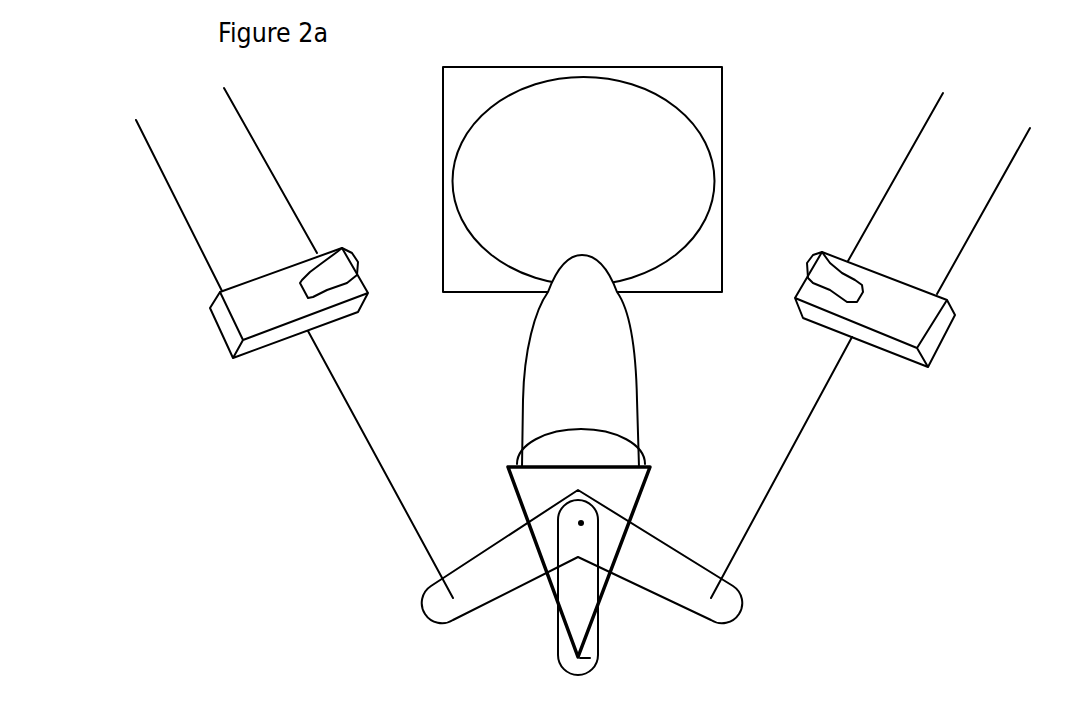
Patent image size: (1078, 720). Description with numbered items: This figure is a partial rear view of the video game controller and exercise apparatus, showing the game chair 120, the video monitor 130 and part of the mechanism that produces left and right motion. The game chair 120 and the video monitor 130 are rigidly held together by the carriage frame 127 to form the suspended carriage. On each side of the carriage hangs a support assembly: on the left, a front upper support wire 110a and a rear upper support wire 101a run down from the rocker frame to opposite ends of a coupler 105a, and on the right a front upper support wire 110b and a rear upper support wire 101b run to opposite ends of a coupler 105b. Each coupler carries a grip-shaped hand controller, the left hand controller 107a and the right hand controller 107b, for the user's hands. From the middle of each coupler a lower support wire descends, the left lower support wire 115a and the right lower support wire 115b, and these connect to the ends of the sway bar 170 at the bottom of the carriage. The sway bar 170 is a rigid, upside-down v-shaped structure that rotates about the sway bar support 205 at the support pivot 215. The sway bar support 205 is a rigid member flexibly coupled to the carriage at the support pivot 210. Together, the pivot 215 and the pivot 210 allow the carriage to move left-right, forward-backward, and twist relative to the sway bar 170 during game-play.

The left rear upper support wire 101a is at (183, 208).
The right rear upper support wire 101b is at (968, 238).
The left coupler 105a is at (220, 332).
The right coupler 105b is at (943, 338).
The left hand controller 107a is at (357, 254).
The right hand controller 107b is at (805, 260).
The left front upper support wire 110a is at (277, 185).
The right front upper support wire 110b is at (883, 198).
The left lower support wire 115a is at (382, 462).
The right lower support wire 115b is at (790, 448).
The game chair 120 is at (640, 378).
The carriage frame 127 is at (643, 497).
The video monitor 130 is at (727, 120).
The sway bar 170 is at (479, 614).
The sway bar support 205 is at (572, 595).
The support pivot 210 is at (590, 658).
The support pivot 215 is at (578, 522).